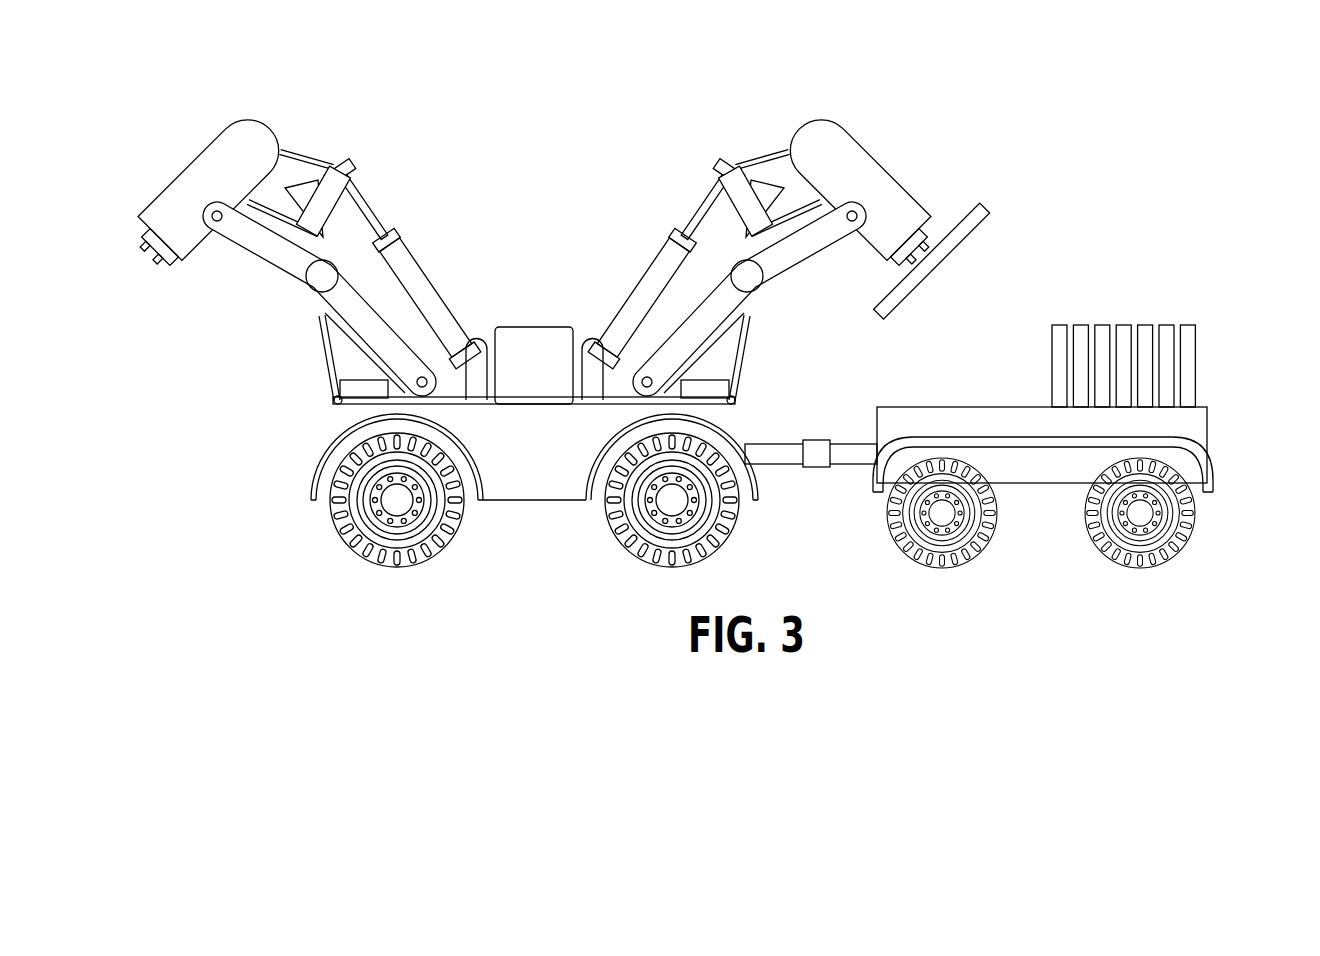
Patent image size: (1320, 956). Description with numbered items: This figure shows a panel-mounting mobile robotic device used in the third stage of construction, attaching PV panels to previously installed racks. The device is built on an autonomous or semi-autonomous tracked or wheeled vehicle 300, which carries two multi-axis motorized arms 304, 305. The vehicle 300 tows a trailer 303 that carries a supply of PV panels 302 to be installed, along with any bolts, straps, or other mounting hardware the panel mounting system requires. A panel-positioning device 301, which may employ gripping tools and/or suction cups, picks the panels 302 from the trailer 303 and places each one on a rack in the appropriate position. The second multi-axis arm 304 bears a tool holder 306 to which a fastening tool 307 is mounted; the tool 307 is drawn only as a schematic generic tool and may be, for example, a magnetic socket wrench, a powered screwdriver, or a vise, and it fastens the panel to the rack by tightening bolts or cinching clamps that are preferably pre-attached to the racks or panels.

The vehicle 300 is at (538, 325).
The panel-positioning device 301 is at (882, 178).
The PV panels 302 is at (1084, 325).
The trailer 303 is at (1213, 473).
The multi-axis arm 304 is at (323, 220).
The multi-axis arm 305 is at (760, 188).
The tool holder 306 is at (217, 145).
The fastening tool 307 is at (152, 264).